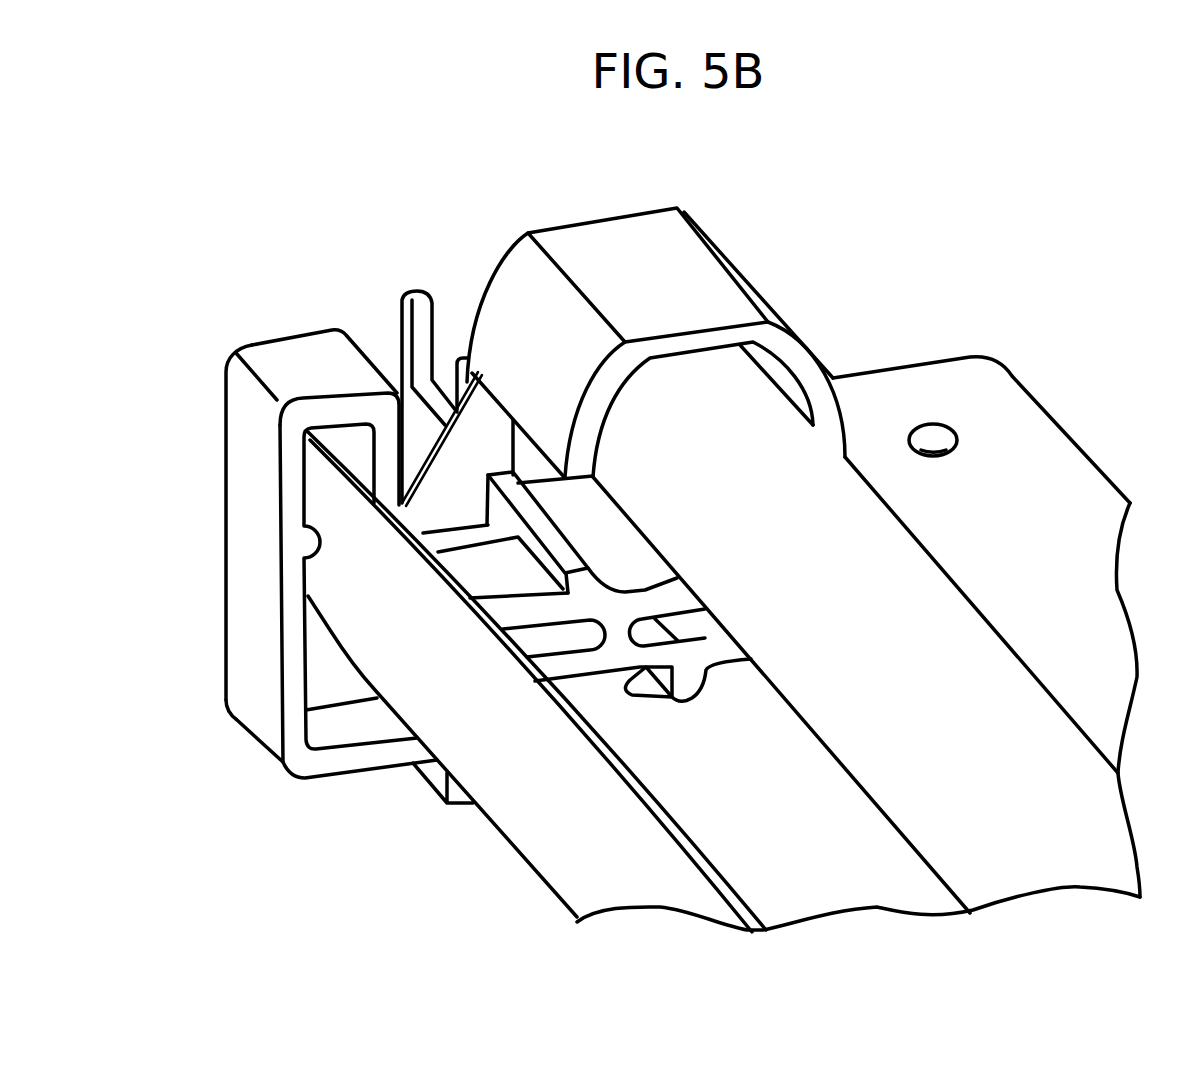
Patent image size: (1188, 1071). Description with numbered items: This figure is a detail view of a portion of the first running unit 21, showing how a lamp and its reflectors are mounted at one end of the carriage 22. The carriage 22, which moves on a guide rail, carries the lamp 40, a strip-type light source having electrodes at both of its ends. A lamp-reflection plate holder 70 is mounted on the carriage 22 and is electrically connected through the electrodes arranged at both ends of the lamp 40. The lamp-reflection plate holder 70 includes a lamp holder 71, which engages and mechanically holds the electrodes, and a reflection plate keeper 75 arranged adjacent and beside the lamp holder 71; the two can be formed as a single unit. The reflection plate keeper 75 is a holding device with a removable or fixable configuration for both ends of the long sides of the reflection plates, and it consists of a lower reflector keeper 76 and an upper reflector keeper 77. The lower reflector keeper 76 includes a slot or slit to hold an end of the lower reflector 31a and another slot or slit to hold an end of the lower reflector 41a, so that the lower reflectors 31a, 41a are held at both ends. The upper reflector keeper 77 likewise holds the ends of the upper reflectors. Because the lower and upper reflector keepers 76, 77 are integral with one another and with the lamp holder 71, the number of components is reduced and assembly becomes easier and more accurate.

The first running unit 21 is at (1024, 344).
The carriage 22 is at (1050, 440).
The lamp 40 is at (940, 580).
The lower reflector 31a is at (733, 835).
The lower reflector 41a is at (515, 826).
The lamp-reflection plate holder 70 is at (457, 300).
The lamp holder 71 is at (598, 228).
The reflection plate keeper 75 is at (217, 458).
The lower reflector keeper 76 is at (597, 665).
The upper reflector keeper 77 is at (298, 350).